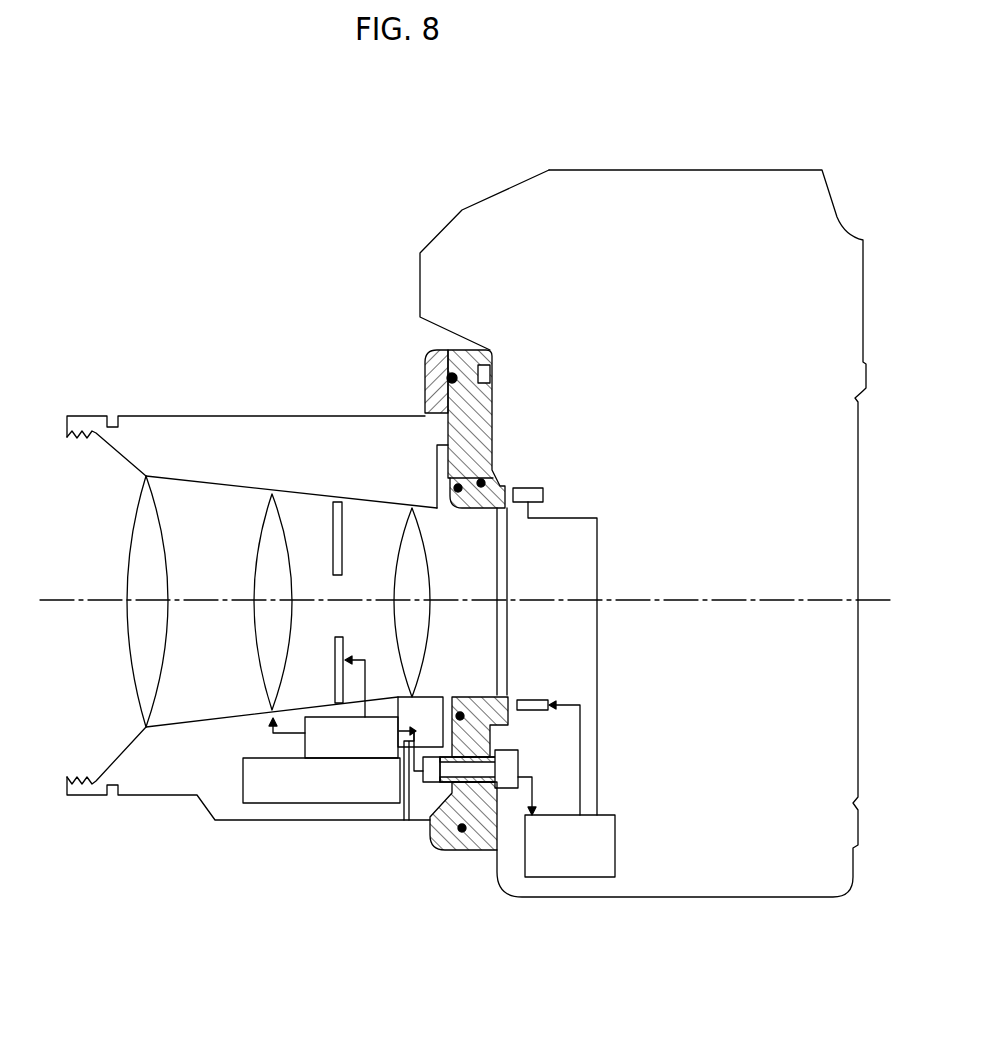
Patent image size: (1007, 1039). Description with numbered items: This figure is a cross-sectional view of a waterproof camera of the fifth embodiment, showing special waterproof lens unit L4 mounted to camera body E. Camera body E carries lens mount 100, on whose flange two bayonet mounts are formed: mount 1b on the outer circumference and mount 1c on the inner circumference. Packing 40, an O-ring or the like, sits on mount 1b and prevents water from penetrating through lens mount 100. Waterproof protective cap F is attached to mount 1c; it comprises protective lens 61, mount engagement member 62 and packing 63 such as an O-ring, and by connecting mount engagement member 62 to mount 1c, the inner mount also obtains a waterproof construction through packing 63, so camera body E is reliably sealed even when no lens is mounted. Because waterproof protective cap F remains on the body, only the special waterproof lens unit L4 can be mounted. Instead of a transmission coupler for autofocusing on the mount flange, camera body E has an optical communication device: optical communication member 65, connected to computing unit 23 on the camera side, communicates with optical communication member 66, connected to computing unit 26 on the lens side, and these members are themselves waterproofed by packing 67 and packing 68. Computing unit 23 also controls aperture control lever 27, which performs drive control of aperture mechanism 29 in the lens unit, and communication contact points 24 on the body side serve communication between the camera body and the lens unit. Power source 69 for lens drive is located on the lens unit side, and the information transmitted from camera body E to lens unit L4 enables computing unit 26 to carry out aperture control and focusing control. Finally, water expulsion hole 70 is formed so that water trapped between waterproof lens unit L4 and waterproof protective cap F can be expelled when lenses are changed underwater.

The camera body E is at (701, 263).
The waterproof lens unit L4 is at (263, 464).
The waterproof protective cap F is at (512, 629).
The lens mount 100 is at (488, 417).
The packing 40 is at (450, 377).
The mount 1b is at (493, 357).
The mount 1c is at (483, 481).
The packing 63 is at (447, 470).
The mount engagement member 62 is at (468, 508).
The communication contact points 24 is at (541, 490).
The protective lens 61 is at (502, 565).
The aperture mechanism 29 is at (362, 552).
The aperture control lever 27 is at (521, 700).
The packing 67 is at (497, 753).
The optical communication member 65 is at (513, 757).
The computing unit 23 is at (597, 842).
The computing unit 26 is at (313, 745).
The power source 69 is at (277, 795).
The water expulsion hole 70 is at (427, 780).
The optical communication member 66 is at (417, 813).
The packing 68 is at (450, 850).